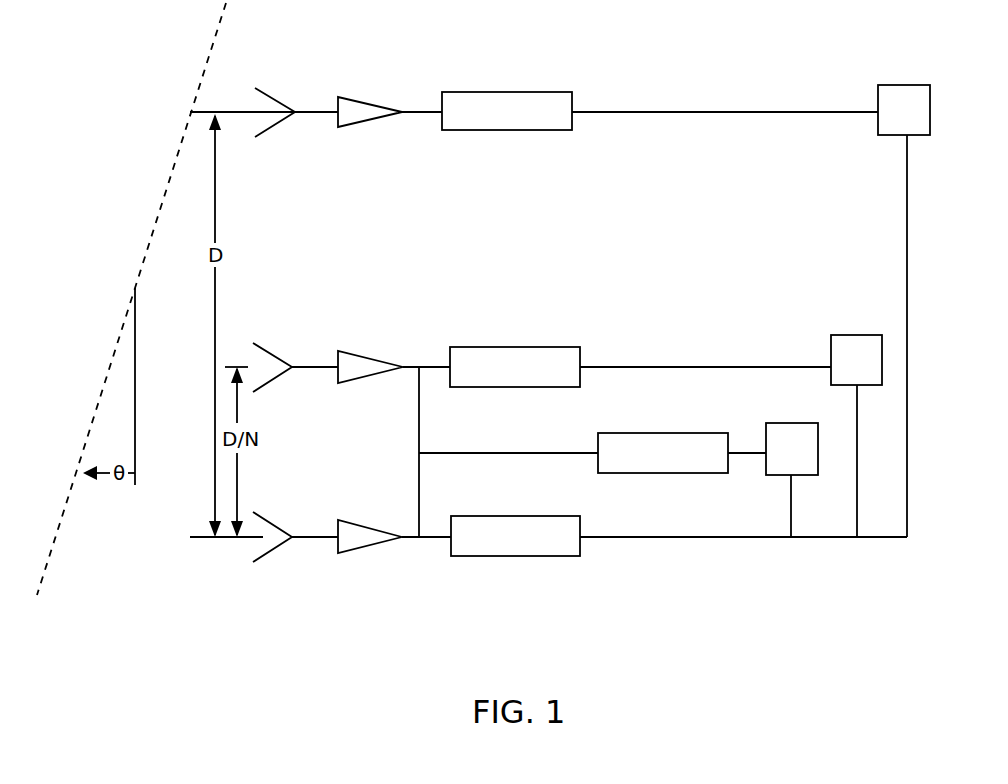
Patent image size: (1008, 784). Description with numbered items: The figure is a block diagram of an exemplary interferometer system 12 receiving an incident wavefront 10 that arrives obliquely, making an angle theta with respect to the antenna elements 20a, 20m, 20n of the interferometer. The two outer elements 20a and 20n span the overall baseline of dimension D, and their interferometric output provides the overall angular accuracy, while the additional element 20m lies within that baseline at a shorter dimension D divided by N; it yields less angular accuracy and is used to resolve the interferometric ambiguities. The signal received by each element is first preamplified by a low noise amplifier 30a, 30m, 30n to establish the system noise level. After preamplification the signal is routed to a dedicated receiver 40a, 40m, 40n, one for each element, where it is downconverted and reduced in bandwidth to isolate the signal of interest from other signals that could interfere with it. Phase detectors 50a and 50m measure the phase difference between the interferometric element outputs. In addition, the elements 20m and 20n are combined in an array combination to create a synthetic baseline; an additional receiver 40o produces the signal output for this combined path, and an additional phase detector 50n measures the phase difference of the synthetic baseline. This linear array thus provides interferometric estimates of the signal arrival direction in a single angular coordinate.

The incident wavefront 10 is at (205, 46).
The interferometer system 12 is at (556, 608).
The antenna element 20a is at (263, 132).
The antenna element 20m is at (263, 387).
The antenna element 20n is at (263, 557).
The low noise amplifier 30a is at (360, 97).
The low noise amplifier 30m is at (360, 352).
The low noise amplifier 30n is at (357, 550).
The receiver 40a is at (505, 92).
The receiver 40m is at (515, 347).
The additional receiver 40o is at (618, 433).
The receiver 40n is at (515, 516).
The phase detector 50a is at (908, 85).
The phase detector 50m is at (863, 335).
The additional phase detector 50n is at (800, 423).